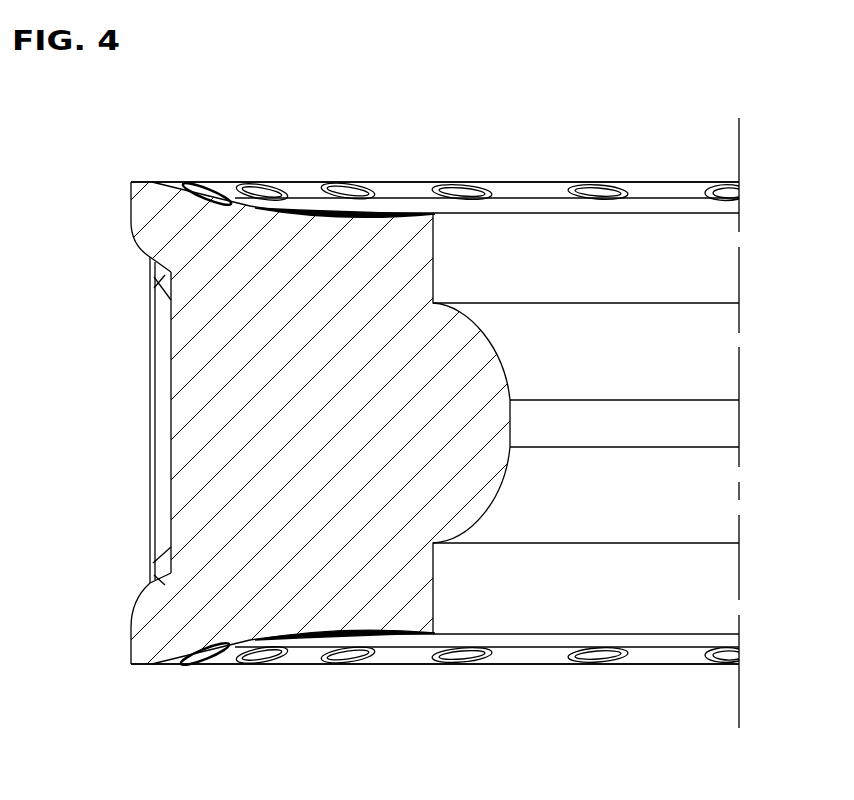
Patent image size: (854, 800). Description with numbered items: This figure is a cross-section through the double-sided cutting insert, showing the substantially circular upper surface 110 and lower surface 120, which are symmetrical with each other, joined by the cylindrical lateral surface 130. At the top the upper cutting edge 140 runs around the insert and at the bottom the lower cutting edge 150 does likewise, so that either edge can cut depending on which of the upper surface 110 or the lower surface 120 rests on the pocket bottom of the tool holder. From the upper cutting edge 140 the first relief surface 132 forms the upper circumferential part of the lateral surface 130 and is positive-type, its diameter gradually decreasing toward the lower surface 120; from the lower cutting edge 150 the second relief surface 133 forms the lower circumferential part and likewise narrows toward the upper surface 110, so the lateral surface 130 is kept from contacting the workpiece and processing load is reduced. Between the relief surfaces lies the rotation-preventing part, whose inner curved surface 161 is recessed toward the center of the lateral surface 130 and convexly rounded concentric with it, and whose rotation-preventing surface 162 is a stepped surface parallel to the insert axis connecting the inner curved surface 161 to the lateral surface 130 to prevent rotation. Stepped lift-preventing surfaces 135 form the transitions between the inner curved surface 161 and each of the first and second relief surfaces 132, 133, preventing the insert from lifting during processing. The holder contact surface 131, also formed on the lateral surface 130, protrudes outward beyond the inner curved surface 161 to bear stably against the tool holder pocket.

The upper surface 110 is at (298, 196).
The lower surface 120 is at (298, 652).
The lateral surface 130 is at (139, 431).
The holder contact surface 131 is at (150, 478).
The first relief surface 132 is at (132, 210).
The second relief surface 133 is at (131, 647).
The lift-preventing surface 135 is at (147, 263).
The upper cutting edge 140 is at (403, 183).
The lower cutting edge 150 is at (398, 664).
The inner curved surface 161 is at (150, 338).
The rotation-preventing surface 162 is at (160, 373).